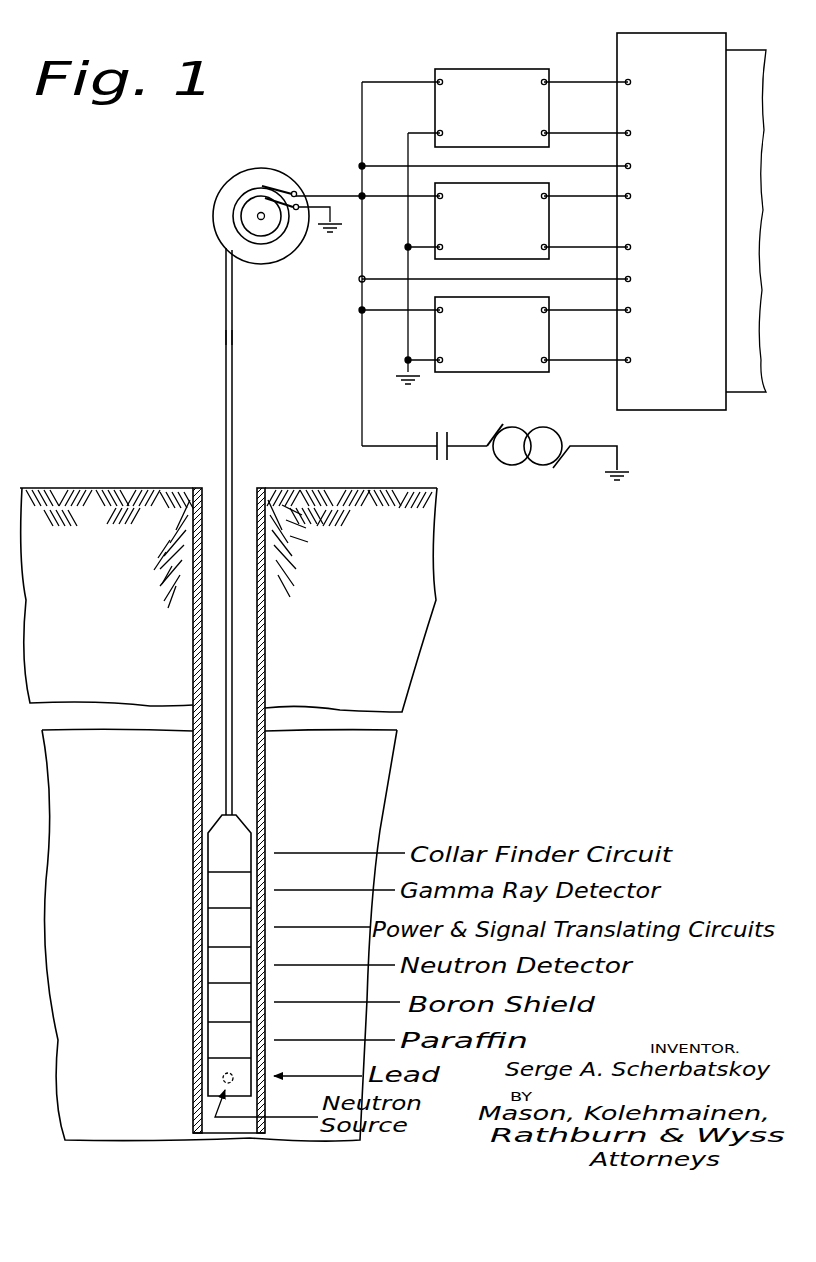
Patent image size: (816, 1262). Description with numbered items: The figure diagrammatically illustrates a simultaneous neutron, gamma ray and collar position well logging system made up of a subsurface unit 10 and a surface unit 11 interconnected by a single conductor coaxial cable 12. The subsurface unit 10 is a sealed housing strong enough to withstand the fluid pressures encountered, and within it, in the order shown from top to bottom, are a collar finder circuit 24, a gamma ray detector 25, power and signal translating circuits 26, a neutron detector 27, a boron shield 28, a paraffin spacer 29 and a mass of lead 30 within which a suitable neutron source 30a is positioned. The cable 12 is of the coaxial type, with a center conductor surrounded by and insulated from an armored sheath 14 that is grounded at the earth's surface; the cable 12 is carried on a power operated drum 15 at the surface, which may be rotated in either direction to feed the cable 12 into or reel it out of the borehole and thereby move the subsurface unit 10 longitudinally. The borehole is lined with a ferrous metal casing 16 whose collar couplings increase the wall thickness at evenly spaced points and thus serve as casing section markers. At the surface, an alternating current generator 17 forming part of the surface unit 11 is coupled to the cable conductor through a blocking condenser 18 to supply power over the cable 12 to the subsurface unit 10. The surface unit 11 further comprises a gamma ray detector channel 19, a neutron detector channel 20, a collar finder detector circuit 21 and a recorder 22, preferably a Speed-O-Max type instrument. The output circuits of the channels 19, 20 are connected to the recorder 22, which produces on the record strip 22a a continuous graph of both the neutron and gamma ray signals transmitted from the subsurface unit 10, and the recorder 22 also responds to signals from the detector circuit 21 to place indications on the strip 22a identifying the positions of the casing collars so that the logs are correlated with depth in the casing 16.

The subsurface unit 10 is at (230, 826).
The surface unit 11 is at (392, 237).
The single conductor coaxial cable 12 is at (222, 312).
The armored sheath 14 is at (234, 339).
The power operated drum 15 is at (222, 225).
The ferrous metal casing 16 is at (260, 625).
The alternating current generator 17 is at (545, 463).
The blocking condenser 18 is at (448, 440).
The gamma ray detector channel 19 is at (498, 68).
The neutron detector channel 20 is at (549, 219).
The collar finder detector circuit 21 is at (549, 332).
The recorder 22 is at (652, 32).
The record strip 22a is at (742, 393).
The collar finder circuit 24 is at (226, 855).
The gamma ray detector 25 is at (218, 888).
The power and signal translating circuits 26 is at (218, 927).
The neutron detector 27 is at (218, 965).
The boron shield 28 is at (220, 1002).
The paraffin spacer 29 is at (226, 1043).
The mass of lead 30 is at (218, 1068).
The neutron source 30a is at (215, 1081).